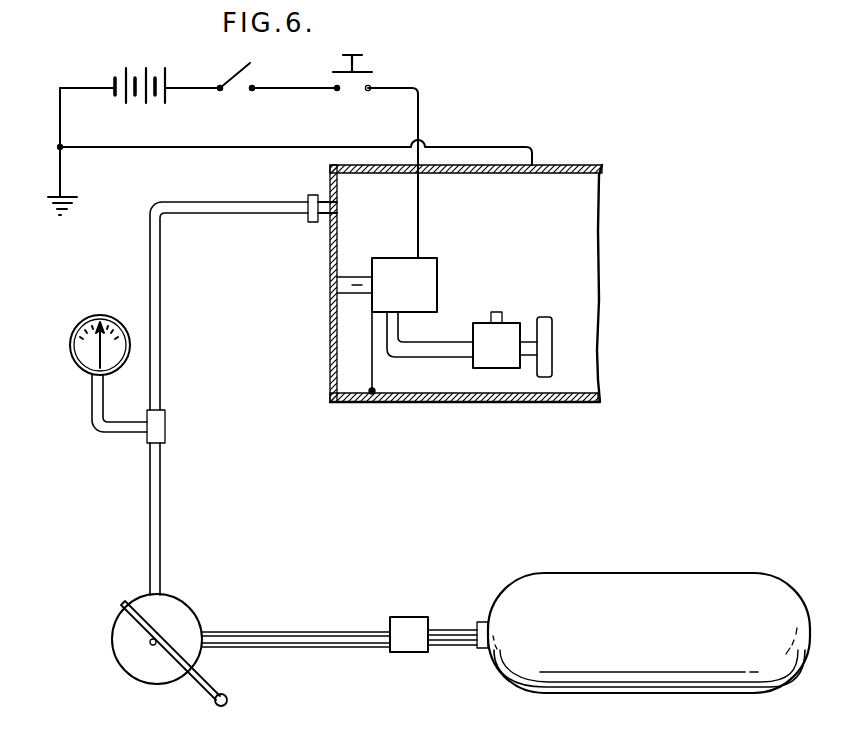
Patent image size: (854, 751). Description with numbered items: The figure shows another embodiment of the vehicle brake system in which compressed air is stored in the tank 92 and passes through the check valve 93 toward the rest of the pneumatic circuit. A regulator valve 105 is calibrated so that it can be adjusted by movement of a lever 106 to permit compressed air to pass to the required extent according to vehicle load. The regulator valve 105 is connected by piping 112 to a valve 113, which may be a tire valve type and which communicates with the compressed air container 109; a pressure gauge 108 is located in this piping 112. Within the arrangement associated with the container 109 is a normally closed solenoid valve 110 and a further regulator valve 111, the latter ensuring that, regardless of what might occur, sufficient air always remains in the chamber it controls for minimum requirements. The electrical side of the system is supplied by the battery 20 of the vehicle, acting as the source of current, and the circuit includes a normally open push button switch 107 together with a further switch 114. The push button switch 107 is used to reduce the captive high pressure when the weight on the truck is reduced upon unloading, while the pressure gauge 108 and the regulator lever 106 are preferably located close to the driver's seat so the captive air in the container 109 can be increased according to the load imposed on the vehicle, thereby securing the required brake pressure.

The battery 20 is at (167, 82).
The push button switch 107 is at (358, 68).
The switch 114 is at (238, 93).
The container 109 is at (556, 178).
The valve 113 is at (318, 217).
The solenoid valve 110 is at (426, 281).
The regulator valve 111 is at (540, 320).
The pressure gauge 108 is at (112, 305).
The piping 112 is at (160, 337).
The tank 92 is at (560, 590).
The check valve 93 is at (407, 626).
The regulator valve 105 is at (128, 660).
The lever 106 is at (200, 688).